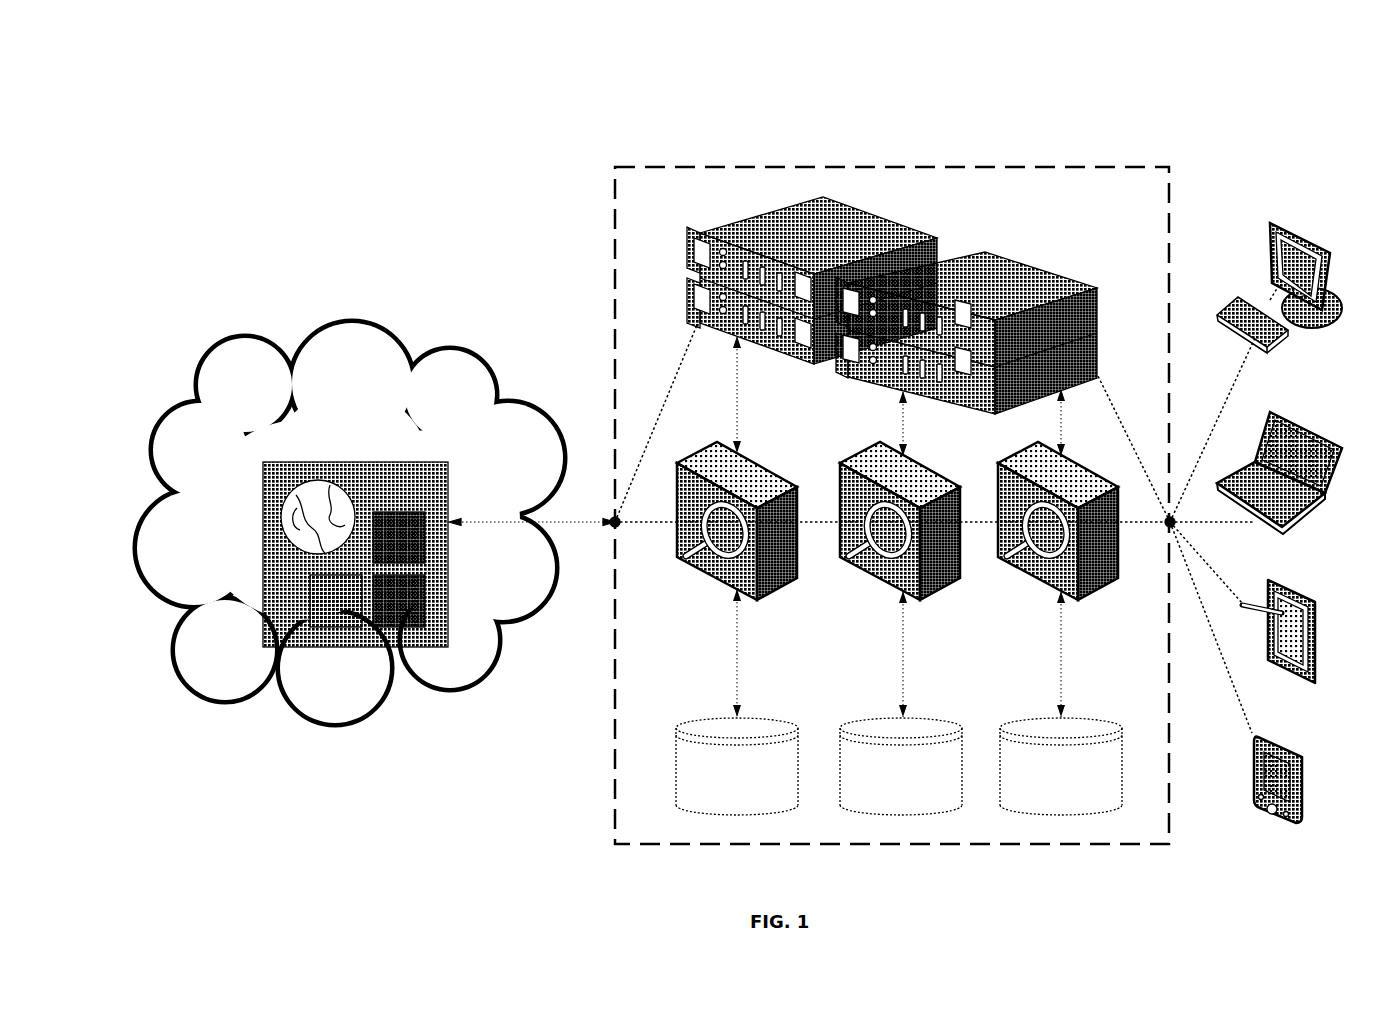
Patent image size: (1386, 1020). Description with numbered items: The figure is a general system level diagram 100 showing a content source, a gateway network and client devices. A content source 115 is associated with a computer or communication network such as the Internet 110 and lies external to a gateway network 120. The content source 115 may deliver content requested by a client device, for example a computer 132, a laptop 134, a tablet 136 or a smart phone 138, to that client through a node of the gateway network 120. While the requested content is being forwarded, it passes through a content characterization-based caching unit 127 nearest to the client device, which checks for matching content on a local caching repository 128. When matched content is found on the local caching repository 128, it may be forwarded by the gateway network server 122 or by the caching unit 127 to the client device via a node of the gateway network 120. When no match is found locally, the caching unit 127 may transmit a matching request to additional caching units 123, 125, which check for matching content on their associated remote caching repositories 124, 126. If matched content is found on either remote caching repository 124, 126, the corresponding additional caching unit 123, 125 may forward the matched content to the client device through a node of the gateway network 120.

The general system level diagram 100 is at (180, 142).
The Internet 110 is at (205, 358).
The content source 115 is at (263, 549).
The gateway network 120 is at (615, 227).
The gateway network server 122 is at (928, 236).
The additional caching unit 123 is at (757, 461).
The remote caching repository 124 is at (753, 716).
The additional caching unit 125 is at (925, 471).
The remote caching repository 126 is at (923, 716).
The content characterization-based caching unit 127 is at (1082, 599).
The local caching repository 128 is at (1077, 716).
The computer 132 is at (1302, 229).
The laptop 134 is at (1297, 421).
The tablet 136 is at (1289, 583).
The smart phone 138 is at (1281, 737).